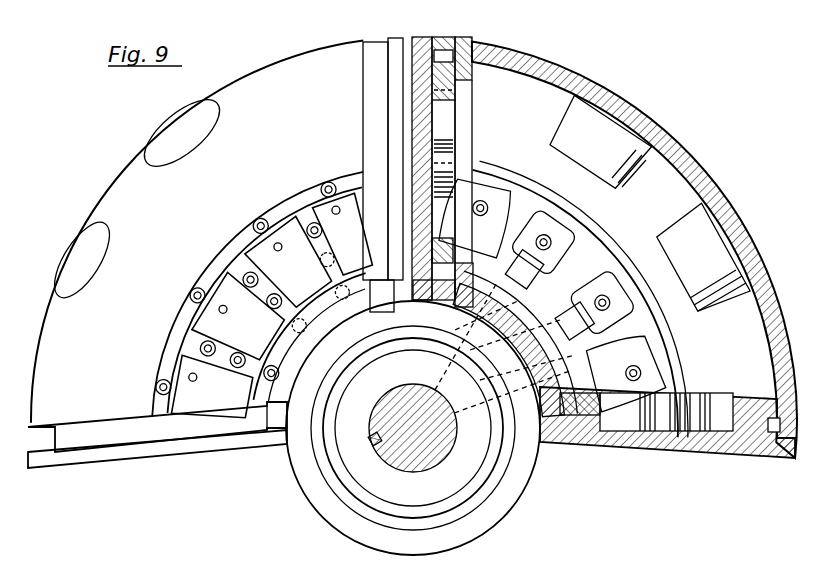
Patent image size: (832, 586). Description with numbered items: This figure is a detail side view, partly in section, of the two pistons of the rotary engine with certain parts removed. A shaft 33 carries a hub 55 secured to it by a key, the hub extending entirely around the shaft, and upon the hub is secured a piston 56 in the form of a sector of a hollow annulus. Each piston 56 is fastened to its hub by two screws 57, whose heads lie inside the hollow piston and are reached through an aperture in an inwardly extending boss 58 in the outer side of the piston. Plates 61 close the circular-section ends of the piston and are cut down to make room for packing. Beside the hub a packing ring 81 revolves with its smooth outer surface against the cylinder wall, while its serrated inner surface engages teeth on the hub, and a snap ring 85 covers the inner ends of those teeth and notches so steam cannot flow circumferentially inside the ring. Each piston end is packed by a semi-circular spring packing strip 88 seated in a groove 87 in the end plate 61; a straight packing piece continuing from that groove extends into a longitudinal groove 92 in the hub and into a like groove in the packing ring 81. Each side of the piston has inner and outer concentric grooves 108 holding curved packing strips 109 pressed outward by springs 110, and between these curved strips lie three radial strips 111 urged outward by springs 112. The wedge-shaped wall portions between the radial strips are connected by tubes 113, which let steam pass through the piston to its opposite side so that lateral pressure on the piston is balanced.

The shaft 33 is at (427, 460).
The hub 55 is at (370, 485).
The piston 56 is at (82, 248).
The screw 57 is at (548, 261).
The inwardly extending boss 58 is at (566, 135).
The plate 61 is at (420, 40).
The packing ring 81 is at (530, 468).
The snap ring 85 is at (490, 483).
The groove 87 is at (377, 56).
The semi-circular spring packing strip 88 is at (453, 40).
The longitudinal groove 92 is at (388, 312).
The circular concentric groove 108 is at (192, 296).
The packing strip 109 is at (292, 330).
The spring 110 is at (328, 184).
The radial strip 111 is at (320, 262).
The spring 112 is at (312, 226).
The tube 113 is at (276, 246).